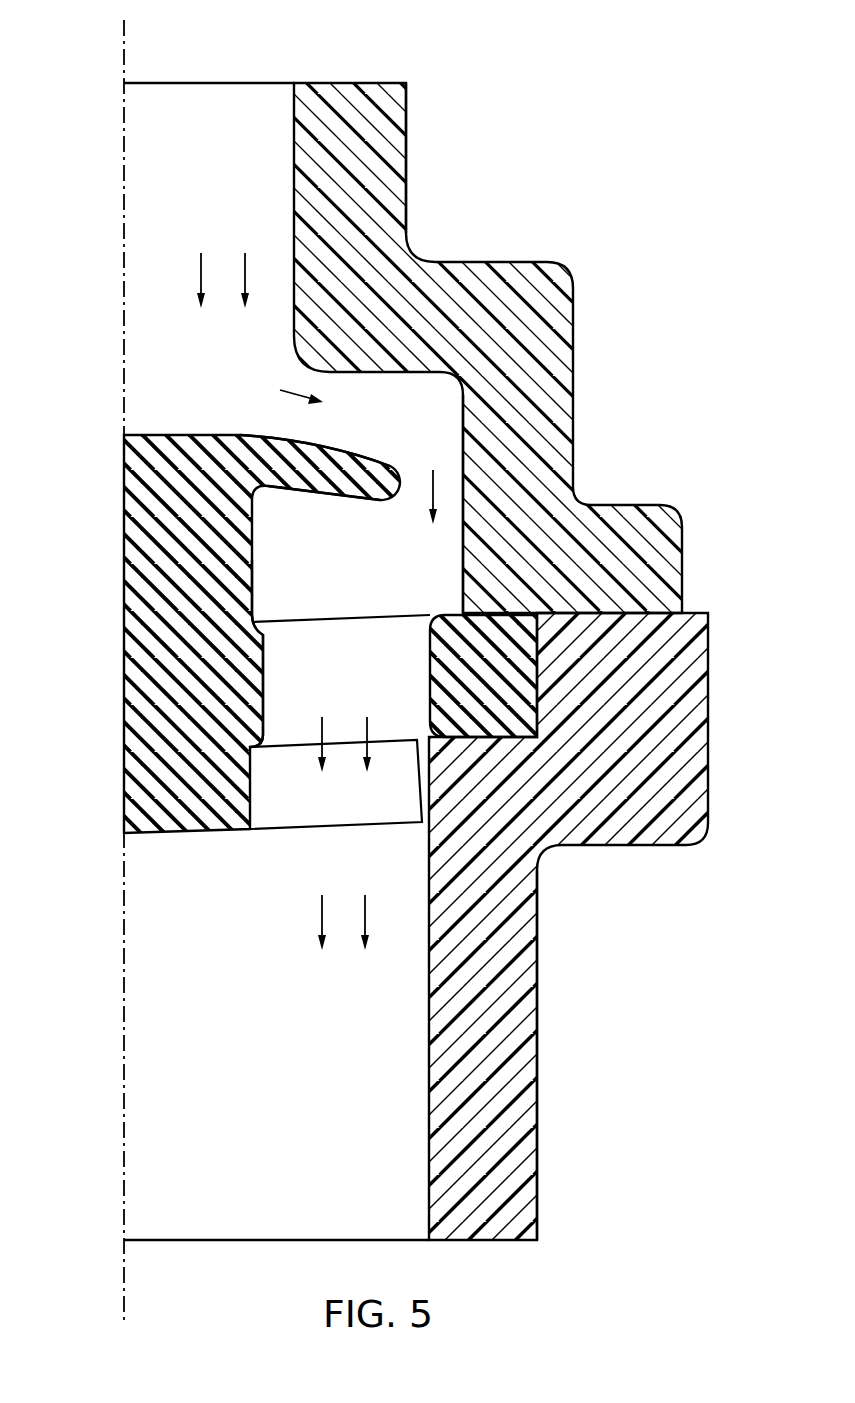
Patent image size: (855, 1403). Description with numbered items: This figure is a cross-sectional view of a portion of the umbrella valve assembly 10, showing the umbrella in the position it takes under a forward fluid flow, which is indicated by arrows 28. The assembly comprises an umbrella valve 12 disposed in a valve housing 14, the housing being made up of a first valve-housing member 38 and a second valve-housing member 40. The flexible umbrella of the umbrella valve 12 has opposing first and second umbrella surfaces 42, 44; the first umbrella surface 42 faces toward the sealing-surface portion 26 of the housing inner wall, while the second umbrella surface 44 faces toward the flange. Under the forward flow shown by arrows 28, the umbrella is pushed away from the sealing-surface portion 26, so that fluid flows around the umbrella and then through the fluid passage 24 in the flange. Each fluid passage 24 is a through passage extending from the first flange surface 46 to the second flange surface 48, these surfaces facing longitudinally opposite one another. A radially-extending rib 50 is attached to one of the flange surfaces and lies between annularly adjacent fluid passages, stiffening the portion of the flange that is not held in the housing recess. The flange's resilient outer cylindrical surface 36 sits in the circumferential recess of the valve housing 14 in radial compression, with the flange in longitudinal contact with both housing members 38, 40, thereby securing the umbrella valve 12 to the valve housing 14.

The umbrella valve assembly 10 is at (620, 93).
The umbrella valve 12 is at (141, 506).
The valve housing 14 is at (421, 150).
The fluid passage 24 is at (366, 618).
The sealing-surface portion 26 is at (416, 372).
The arrows indicating forward fluid flow 28 is at (200, 275).
The outer cylindrical surface 36 is at (540, 684).
The first valve-housing member 38 is at (406, 205).
The second valve-housing member 40 is at (539, 1058).
The first umbrella surface 42 is at (354, 451).
The second umbrella surface 44 is at (318, 492).
The first flange surface 46 is at (257, 621).
The second flange surface 48 is at (256, 748).
The radially-extending rib 50 is at (278, 829).